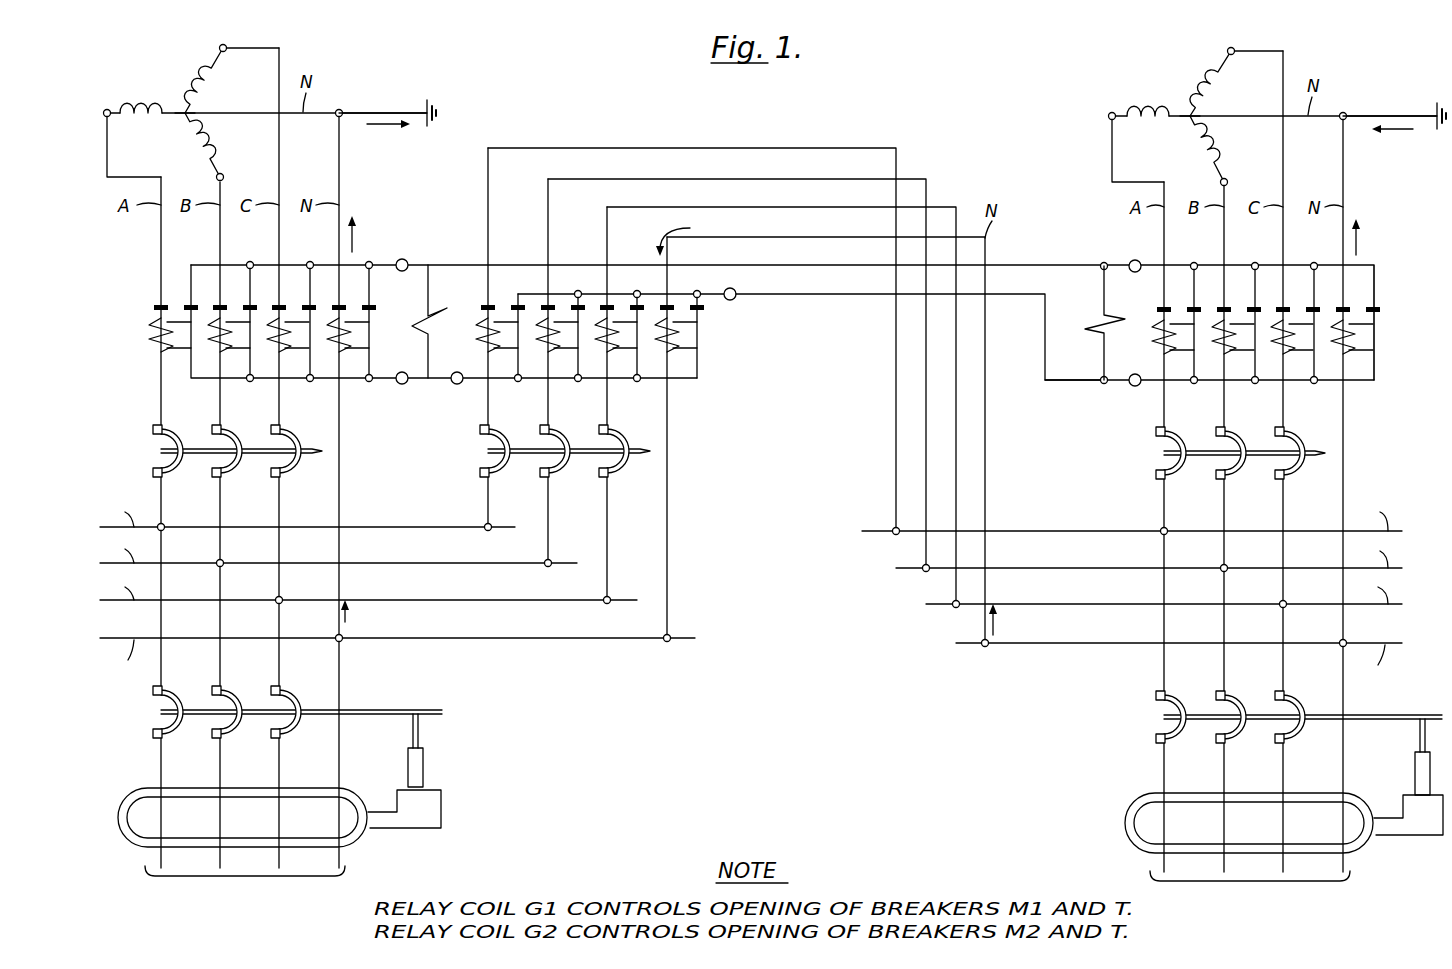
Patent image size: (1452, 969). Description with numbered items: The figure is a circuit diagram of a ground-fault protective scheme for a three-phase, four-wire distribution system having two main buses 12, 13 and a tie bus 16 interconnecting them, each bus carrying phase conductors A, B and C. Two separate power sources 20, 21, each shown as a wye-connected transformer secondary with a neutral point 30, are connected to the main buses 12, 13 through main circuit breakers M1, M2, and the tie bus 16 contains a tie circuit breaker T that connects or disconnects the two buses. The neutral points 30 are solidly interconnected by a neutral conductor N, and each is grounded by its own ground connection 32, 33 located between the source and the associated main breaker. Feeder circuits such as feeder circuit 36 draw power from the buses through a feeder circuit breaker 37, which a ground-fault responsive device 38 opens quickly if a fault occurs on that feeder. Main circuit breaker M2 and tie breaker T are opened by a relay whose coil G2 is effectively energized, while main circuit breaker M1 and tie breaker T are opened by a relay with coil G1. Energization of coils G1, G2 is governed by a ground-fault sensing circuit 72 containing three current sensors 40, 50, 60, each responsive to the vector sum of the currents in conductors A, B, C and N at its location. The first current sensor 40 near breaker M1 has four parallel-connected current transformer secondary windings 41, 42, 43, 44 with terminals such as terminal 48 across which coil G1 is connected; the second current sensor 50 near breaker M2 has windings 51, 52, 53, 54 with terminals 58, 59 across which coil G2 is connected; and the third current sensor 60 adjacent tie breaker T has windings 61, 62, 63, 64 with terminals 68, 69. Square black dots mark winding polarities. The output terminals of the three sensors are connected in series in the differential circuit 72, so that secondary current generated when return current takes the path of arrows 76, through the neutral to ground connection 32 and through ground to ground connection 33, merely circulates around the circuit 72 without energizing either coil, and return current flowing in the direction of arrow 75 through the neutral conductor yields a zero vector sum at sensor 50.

The main bus 12 is at (84, 591).
The main bus 13 is at (1432, 594).
The tie bus 16 is at (786, 203).
The power source 20 is at (172, 83).
The power source 21 is at (1177, 86).
The neutral point 30 is at (183, 116).
The ground connection 32 is at (381, 113).
The ground connection 33 is at (1388, 116).
The feeder circuit 36 is at (178, 878).
The feeder circuit breaker 37 is at (158, 715).
The ground-fault responsive device 38 is at (397, 861).
The first current sensor 40 is at (405, 322).
The secondary winding 41 is at (150, 346).
The secondary winding 42 is at (215, 348).
The secondary winding 43 is at (275, 348).
The secondary winding 44 is at (348, 336).
The terminal 48 is at (406, 262).
The second current sensor 50 is at (1223, 323).
The secondary winding 51 is at (1155, 336).
The secondary winding 52 is at (1219, 348).
The secondary winding 53 is at (1279, 348).
The secondary winding 54 is at (1358, 336).
The terminal 58 is at (1130, 261).
The terminal 59 is at (1134, 387).
The third current sensor 60 is at (585, 325).
The secondary winding 61 is at (486, 338).
The secondary winding 62 is at (544, 346).
The secondary winding 63 is at (604, 346).
The secondary winding 64 is at (676, 334).
The terminal 68 is at (455, 384).
The terminal 69 is at (736, 299).
The ground-fault sensing circuit 72 is at (840, 267).
The arrow 75 is at (1356, 241).
The arrows 76 is at (380, 126).
The relay coil G1 is at (434, 312).
The relay coil G2 is at (1092, 322).
The main circuit breaker M1 is at (160, 451).
The main circuit breaker M2 is at (1162, 453).
The tie circuit breaker T is at (488, 451).